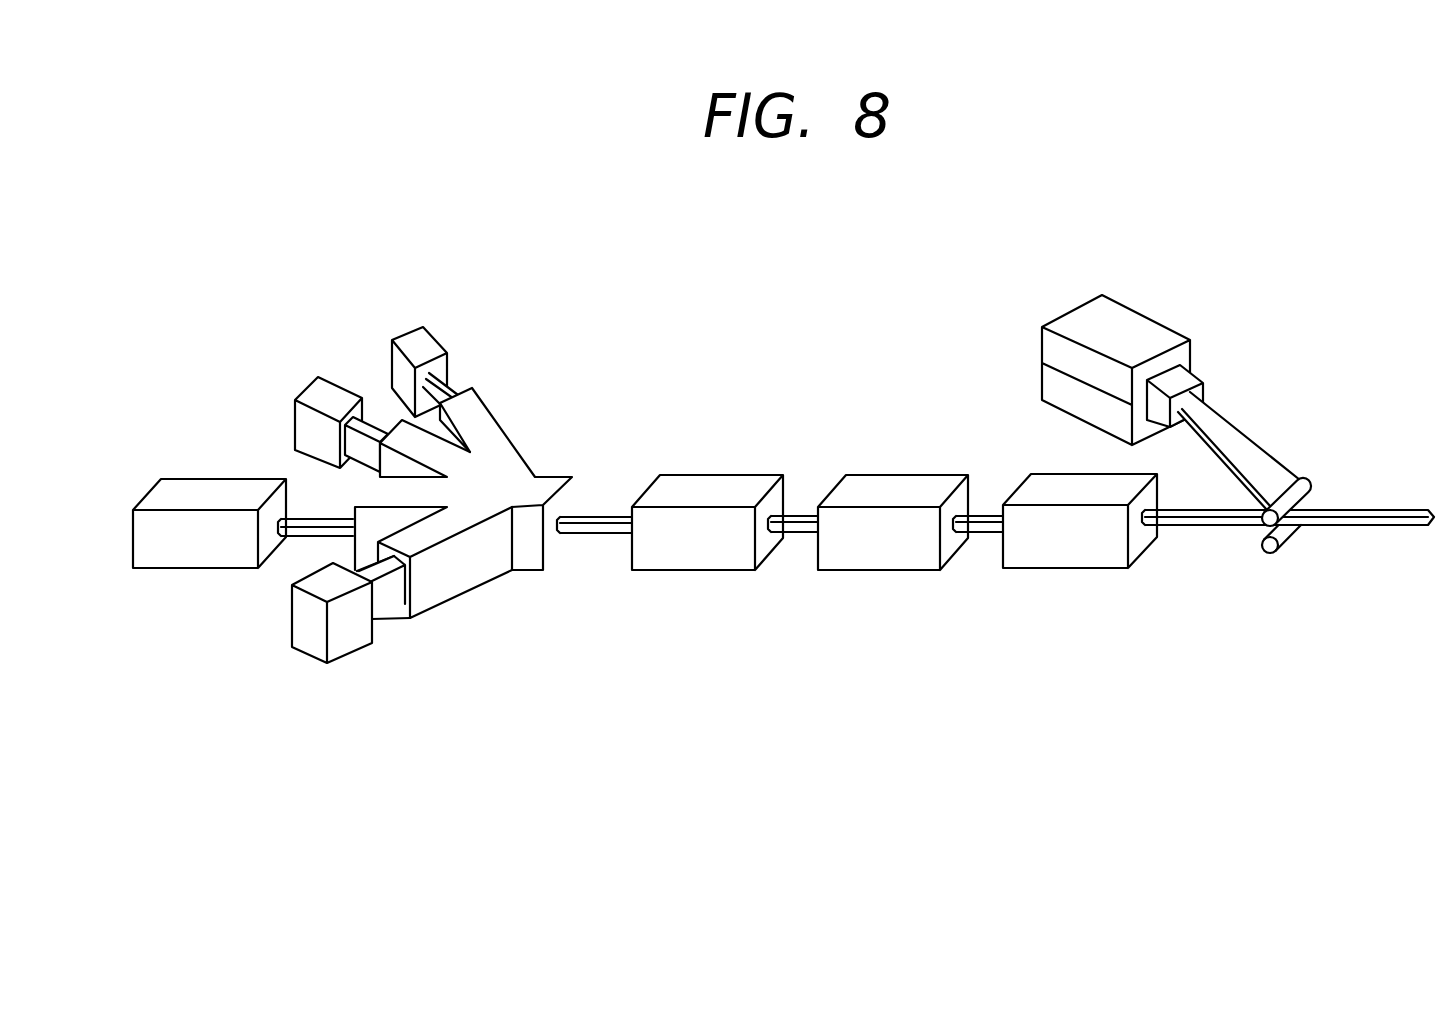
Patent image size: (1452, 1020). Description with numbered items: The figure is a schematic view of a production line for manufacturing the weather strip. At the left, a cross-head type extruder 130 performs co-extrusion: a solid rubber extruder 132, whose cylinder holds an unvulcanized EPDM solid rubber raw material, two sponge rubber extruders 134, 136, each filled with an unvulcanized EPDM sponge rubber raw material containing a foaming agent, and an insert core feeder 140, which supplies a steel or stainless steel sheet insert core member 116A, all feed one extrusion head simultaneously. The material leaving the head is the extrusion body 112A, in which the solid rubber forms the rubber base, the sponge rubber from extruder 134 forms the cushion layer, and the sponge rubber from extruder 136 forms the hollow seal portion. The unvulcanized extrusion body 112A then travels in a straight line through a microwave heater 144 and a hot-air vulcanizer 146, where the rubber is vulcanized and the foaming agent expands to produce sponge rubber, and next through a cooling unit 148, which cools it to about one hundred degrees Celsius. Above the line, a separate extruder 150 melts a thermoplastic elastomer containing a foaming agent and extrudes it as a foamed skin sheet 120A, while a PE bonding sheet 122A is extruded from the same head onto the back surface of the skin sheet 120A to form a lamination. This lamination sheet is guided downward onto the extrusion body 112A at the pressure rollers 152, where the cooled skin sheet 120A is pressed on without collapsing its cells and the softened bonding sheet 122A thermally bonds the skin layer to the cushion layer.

The cross-head type extruder 130 is at (499, 352).
The solid rubber extruder 132 is at (328, 387).
The sponge rubber extruder 134 is at (418, 337).
The sponge rubber extruder 136 is at (353, 637).
The insert core feeder 140 is at (190, 545).
The insert core member 116A is at (302, 535).
The extrusion body 112A is at (603, 510).
The microwave heater 144 is at (695, 538).
The hot-air vulcanizer 146 is at (880, 538).
The cooling unit 148 is at (1066, 535).
The extruder 150 is at (1117, 313).
The bonding sheet 122A is at (1173, 430).
The skin sheet 120A is at (1217, 422).
The pressure rollers 152 is at (1272, 553).